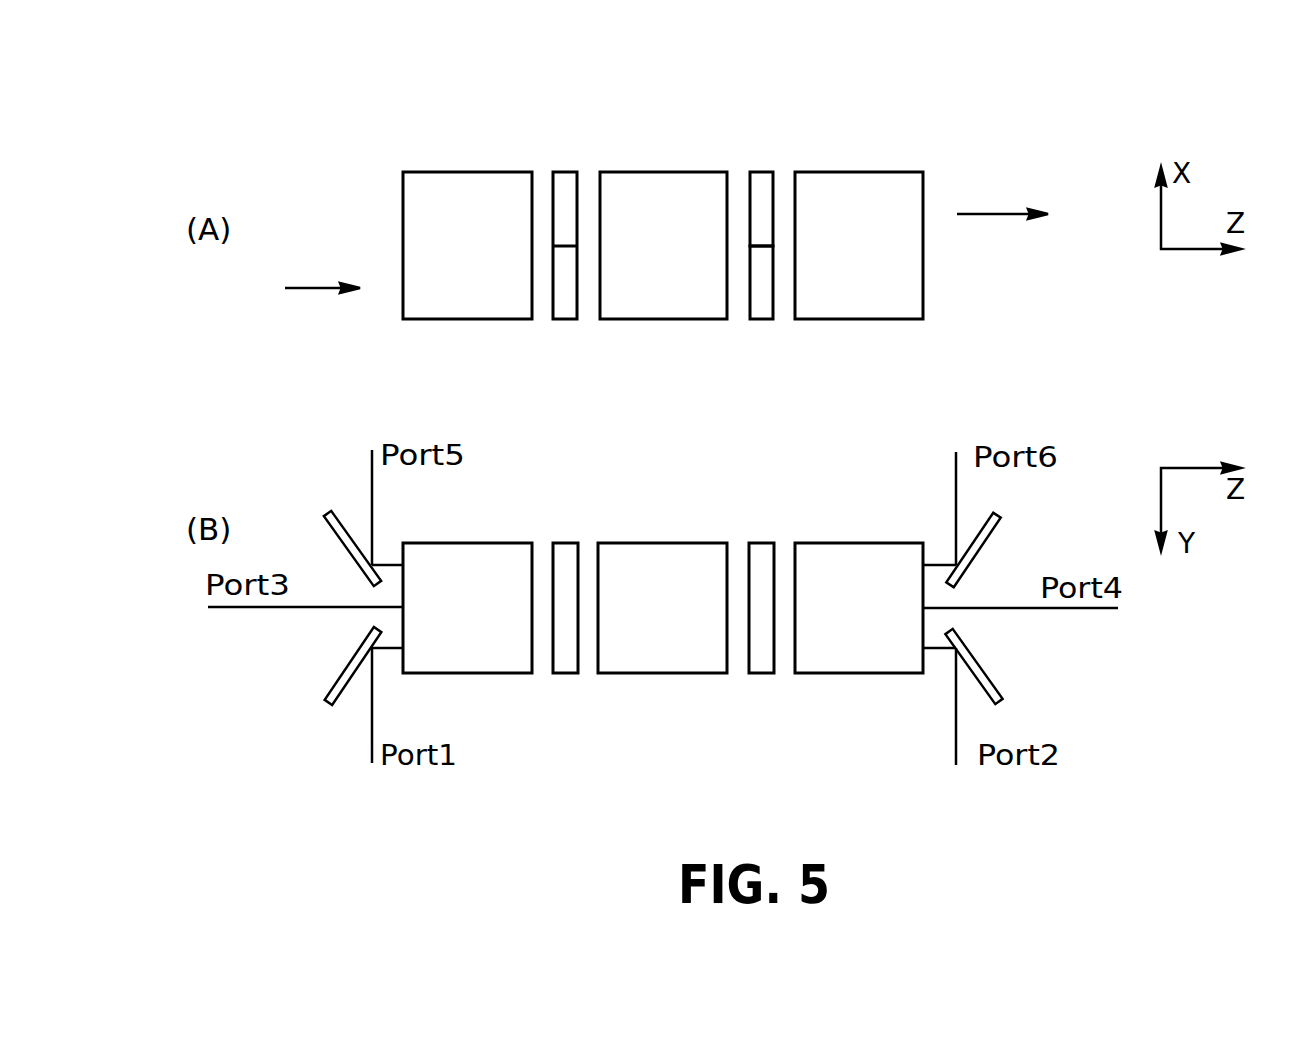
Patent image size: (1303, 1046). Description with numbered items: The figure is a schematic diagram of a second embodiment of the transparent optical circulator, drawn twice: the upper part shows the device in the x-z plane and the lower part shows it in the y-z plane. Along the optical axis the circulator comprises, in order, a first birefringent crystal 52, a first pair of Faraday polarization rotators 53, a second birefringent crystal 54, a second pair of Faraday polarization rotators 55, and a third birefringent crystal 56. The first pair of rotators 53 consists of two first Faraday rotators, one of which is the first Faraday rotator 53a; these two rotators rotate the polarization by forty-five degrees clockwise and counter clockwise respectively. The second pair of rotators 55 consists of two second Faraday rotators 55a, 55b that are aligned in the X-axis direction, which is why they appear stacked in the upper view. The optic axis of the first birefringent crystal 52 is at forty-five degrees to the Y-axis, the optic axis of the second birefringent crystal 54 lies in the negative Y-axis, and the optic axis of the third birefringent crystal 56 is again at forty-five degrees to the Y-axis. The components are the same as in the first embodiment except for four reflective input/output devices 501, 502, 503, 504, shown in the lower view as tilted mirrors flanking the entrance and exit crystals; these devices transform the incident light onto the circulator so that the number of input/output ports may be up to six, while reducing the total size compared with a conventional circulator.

The first birefringent crystal 52 is at (478, 295).
The first pair of Faraday polarization rotators 53 is at (565, 653).
The first Faraday rotator 53a is at (565, 190).
The second birefringent crystal 54 is at (674, 295).
The second pair of Faraday polarization rotators 55 is at (758, 658).
The second Faraday rotator 55a is at (760, 190).
The second Faraday rotator 55b is at (765, 302).
The third birefringent crystal 56 is at (873, 295).
The reflective input/output device 501 is at (331, 520).
The reflective input/output device 502 is at (340, 697).
The reflective input/output device 503 is at (976, 551).
The reflective input/output device 504 is at (980, 678).